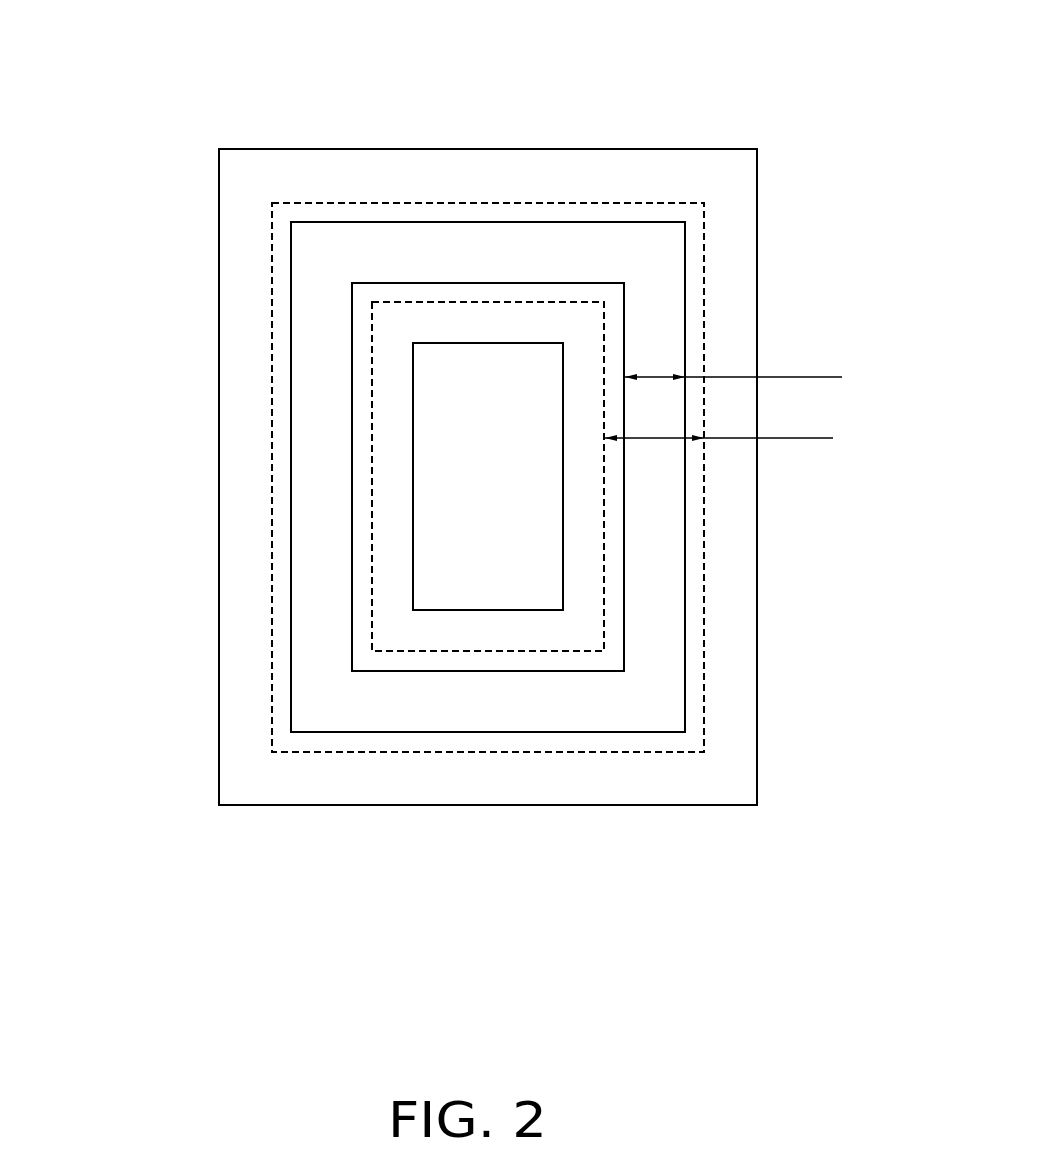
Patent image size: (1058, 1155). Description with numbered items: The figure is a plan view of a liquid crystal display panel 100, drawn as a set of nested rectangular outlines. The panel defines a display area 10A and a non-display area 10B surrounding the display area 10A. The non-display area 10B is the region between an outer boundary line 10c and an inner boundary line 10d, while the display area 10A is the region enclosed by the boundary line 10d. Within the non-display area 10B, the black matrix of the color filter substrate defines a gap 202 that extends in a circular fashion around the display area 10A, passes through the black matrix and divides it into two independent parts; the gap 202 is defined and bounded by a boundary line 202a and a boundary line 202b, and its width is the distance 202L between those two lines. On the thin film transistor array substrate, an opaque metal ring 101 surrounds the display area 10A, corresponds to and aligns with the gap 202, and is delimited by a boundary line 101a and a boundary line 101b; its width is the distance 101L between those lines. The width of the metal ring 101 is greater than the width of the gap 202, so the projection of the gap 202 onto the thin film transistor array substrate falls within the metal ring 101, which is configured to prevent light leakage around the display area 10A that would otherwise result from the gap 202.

The liquid crystal display panel 100 is at (507, 47).
The display area 10A is at (522, 382).
The non-display area 10B is at (118, 477).
The boundary line 10c is at (218, 499).
The boundary line 10d is at (413, 570).
The gap 202 is at (883, 475).
The boundary line 202a is at (626, 510).
The boundary line 202b is at (686, 552).
The distance 202L is at (733, 363).
The metal ring 101 is at (872, 587).
The boundary line 101a is at (605, 628).
The boundary line 101b is at (704, 659).
The distance 101L is at (719, 424).